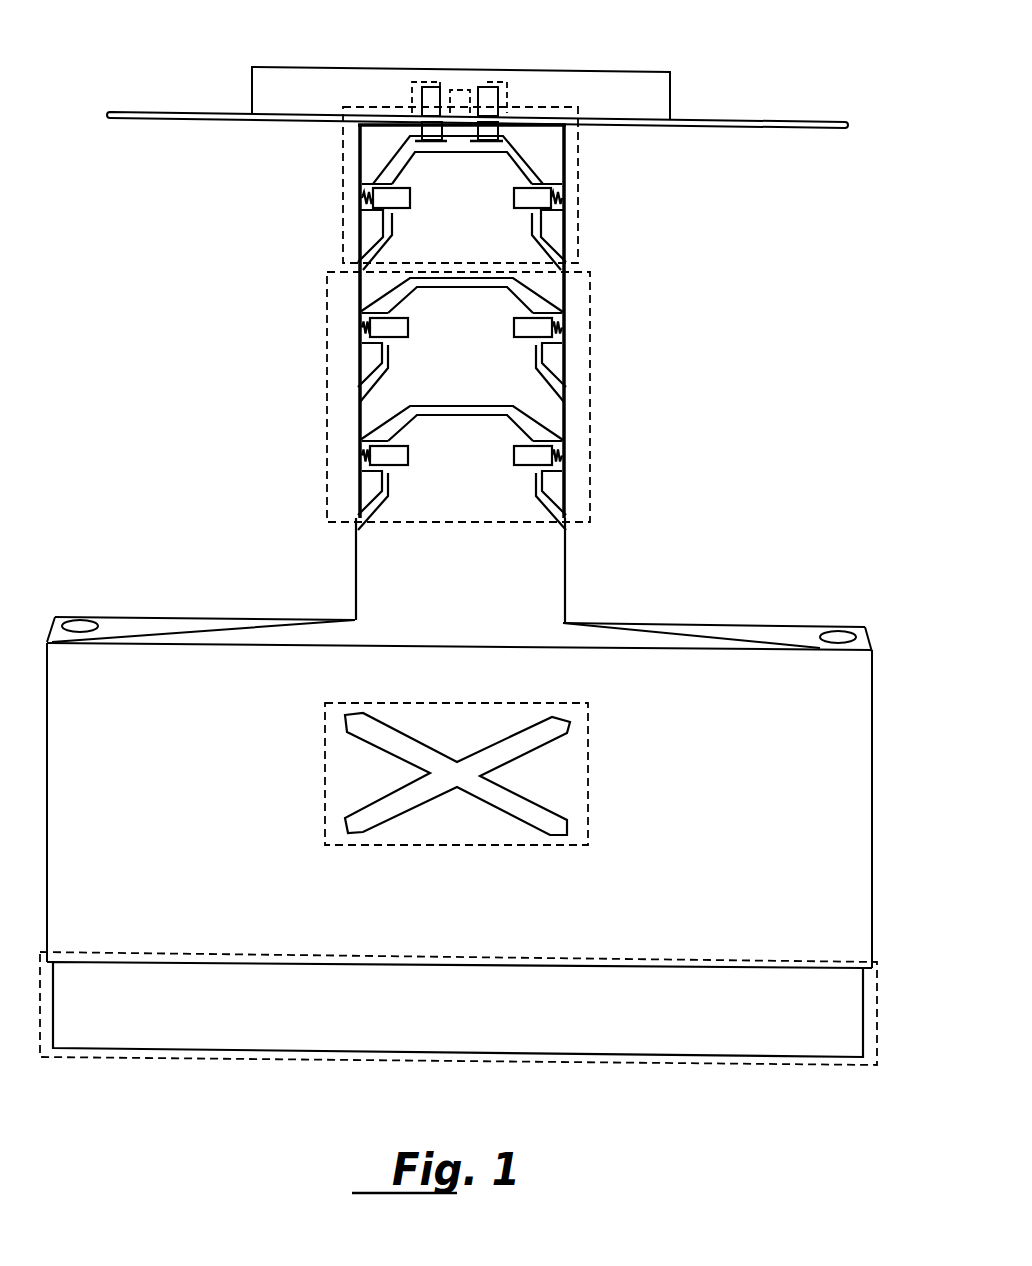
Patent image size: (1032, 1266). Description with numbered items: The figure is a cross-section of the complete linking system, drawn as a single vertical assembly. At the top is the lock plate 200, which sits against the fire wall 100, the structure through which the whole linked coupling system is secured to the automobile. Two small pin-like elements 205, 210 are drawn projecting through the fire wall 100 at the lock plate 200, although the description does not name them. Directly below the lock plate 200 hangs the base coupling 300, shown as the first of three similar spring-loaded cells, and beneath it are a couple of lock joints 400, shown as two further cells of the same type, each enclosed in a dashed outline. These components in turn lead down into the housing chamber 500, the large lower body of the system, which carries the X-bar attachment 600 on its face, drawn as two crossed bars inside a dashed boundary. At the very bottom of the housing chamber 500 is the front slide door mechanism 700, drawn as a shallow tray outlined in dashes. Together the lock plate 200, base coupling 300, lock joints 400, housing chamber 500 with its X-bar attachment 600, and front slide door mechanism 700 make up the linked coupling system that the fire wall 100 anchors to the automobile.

The fire wall 100 is at (172, 112).
The lock plate 200 is at (672, 87).
The connector pin 205 is at (512, 88).
The connector pin 210 is at (440, 85).
The base coupling 300 is at (580, 187).
The lock joints 400 is at (328, 382).
The housing chamber 500 is at (565, 578).
The X-bar attachment 600 is at (588, 785).
The front slide door mechanism 700 is at (322, 1058).